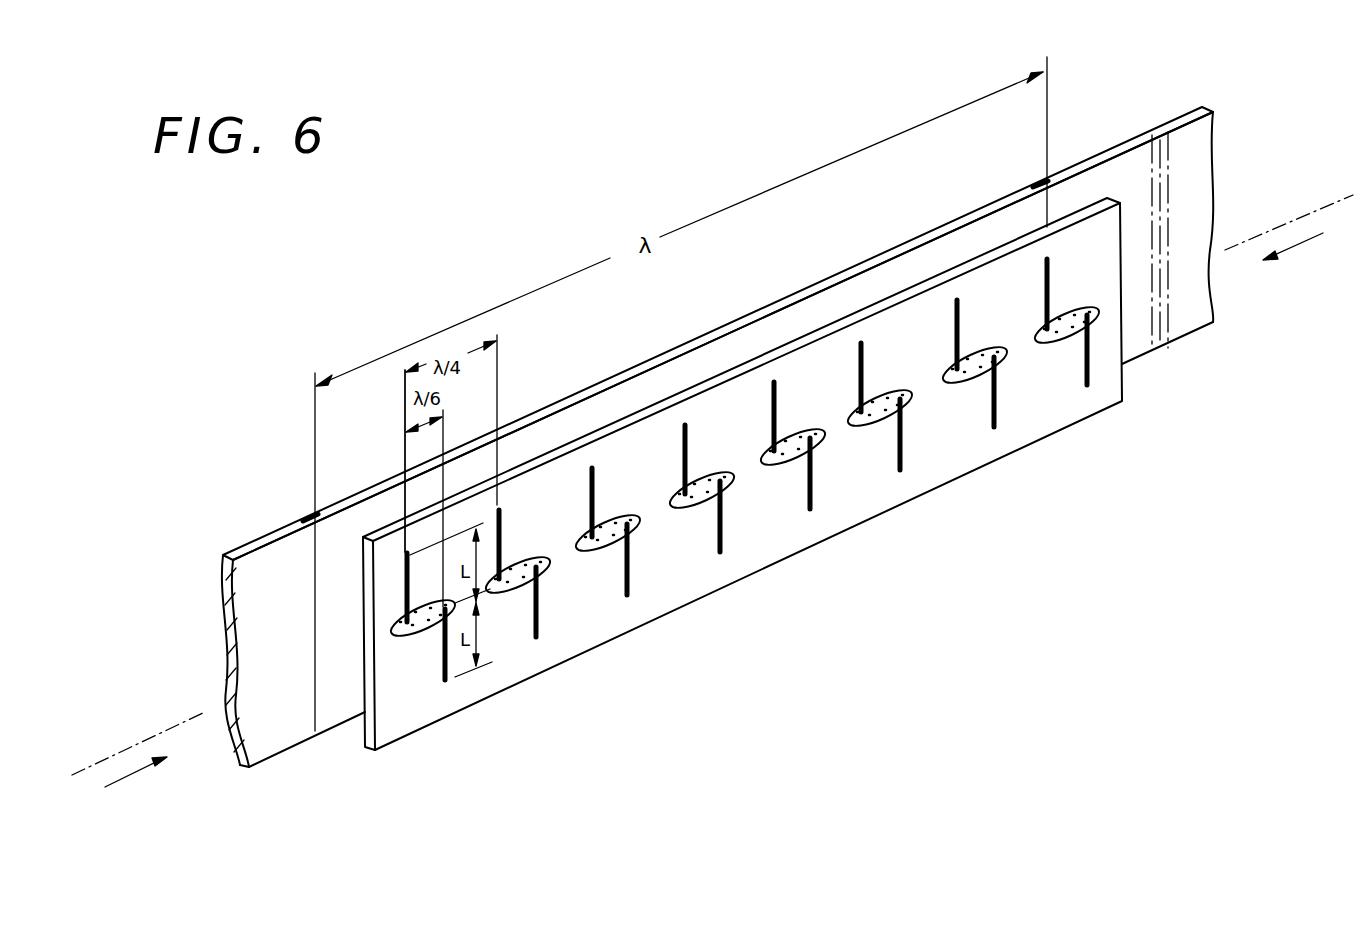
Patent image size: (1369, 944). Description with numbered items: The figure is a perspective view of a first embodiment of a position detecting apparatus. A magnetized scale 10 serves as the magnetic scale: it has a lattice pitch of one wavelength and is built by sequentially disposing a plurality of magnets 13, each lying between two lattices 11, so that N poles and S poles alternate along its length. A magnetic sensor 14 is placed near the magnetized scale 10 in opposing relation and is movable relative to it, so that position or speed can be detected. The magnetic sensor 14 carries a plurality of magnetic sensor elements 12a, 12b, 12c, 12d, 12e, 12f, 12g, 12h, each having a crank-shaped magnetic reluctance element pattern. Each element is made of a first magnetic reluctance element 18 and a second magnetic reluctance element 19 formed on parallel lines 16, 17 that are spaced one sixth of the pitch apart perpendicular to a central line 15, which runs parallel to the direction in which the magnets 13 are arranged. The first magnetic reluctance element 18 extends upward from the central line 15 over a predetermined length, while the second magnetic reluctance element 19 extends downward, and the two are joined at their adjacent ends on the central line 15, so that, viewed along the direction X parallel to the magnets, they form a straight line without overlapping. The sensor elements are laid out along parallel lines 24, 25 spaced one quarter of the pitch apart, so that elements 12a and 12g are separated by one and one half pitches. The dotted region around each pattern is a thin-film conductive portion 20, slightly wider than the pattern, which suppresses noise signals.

The magnetized scale 10 is at (1112, 117).
The lattice 11 is at (306, 518).
The magnetic sensor element 12a is at (428, 655).
The magnetic sensor element 12b is at (522, 625).
The magnetic sensor element 12c is at (632, 561).
The magnetic sensor element 12d is at (700, 530).
The magnetic sensor element 12e is at (790, 490).
The magnetic sensor element 12f is at (885, 445).
The magnetic sensor element 12g is at (975, 412).
The magnetic sensor element 12h is at (1068, 372).
The magnet 13 is at (257, 563).
The magnetic sensor 14 is at (1103, 398).
The central line 15 is at (1283, 222).
The parallel line 16 is at (406, 456).
The parallel line 24 is at (381, 461).
The parallel line 17 is at (444, 430).
The first magnetic reluctance element 18 is at (404, 594).
The second magnetic reluctance element 19 is at (450, 660).
The conductive portion 20 is at (620, 518).
The parallel line 25 is at (500, 385).